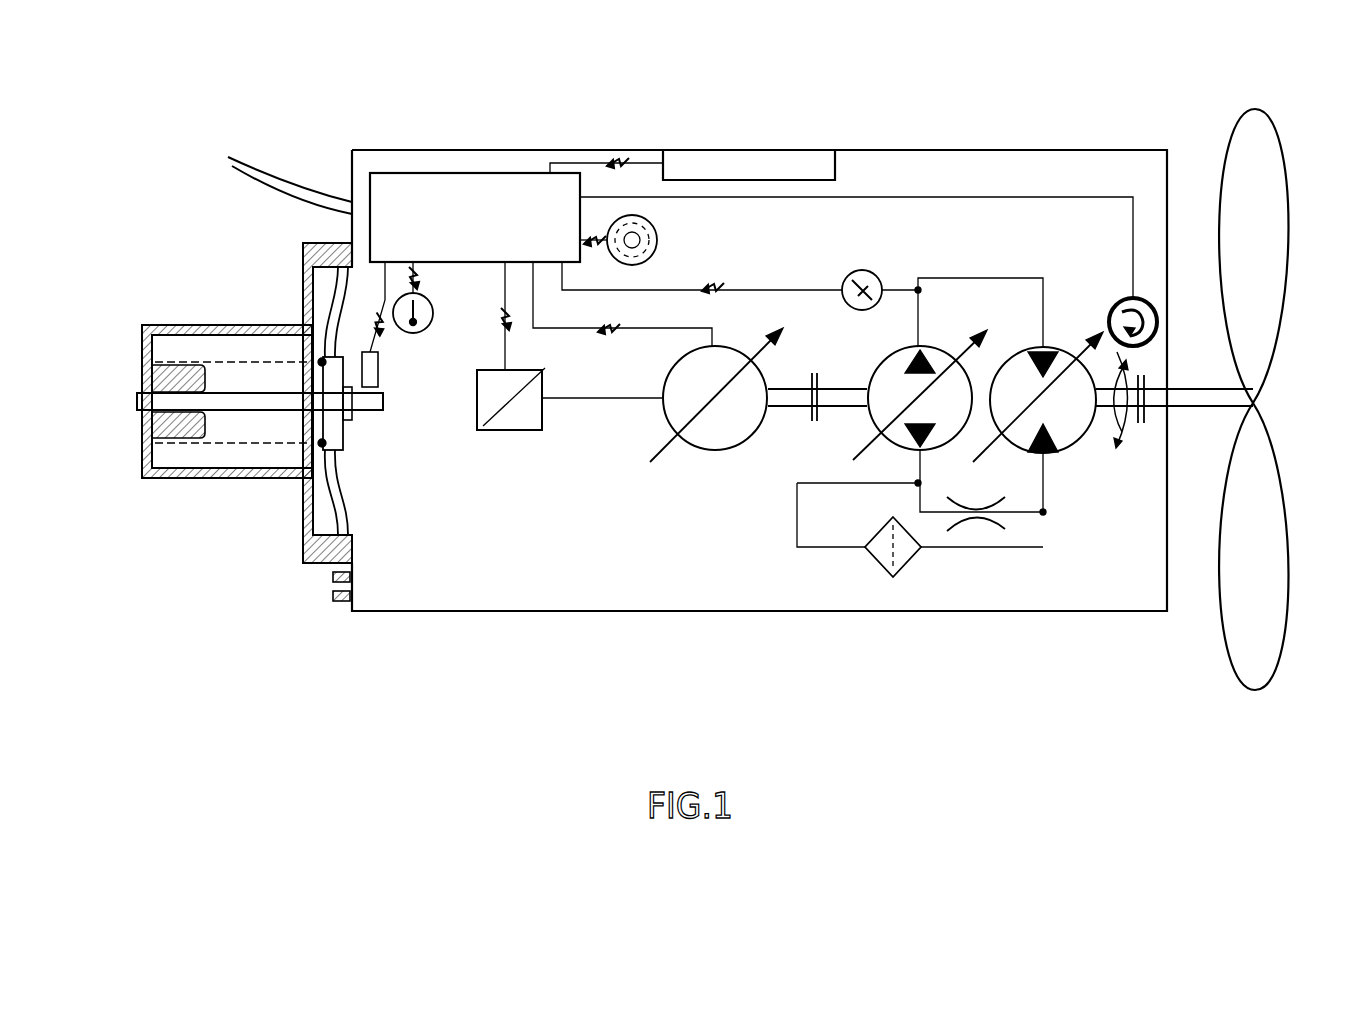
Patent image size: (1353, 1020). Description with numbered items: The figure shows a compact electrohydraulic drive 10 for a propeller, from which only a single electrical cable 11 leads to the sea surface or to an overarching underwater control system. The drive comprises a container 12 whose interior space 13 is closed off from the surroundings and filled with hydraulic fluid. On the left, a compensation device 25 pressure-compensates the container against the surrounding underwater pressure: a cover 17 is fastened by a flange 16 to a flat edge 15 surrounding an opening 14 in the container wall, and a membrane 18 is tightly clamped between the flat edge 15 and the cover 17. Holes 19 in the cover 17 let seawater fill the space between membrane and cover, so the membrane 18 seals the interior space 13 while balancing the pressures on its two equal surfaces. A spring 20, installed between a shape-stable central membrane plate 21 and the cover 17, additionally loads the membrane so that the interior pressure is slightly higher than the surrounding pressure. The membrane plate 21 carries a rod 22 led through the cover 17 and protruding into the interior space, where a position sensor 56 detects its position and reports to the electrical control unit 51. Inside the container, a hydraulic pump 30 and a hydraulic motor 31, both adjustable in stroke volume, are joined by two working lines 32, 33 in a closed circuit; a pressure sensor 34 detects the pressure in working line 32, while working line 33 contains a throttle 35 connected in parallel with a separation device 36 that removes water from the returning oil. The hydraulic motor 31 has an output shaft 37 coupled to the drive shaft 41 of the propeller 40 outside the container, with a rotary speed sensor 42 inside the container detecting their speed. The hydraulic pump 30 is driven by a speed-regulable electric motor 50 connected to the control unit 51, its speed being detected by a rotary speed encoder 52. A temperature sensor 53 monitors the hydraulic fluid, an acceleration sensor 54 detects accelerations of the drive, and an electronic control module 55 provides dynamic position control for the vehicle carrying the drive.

The compact electrohydraulic drive 10 is at (945, 133).
The electrical cable 11 is at (290, 198).
The container 12 is at (455, 611).
The interior space 13 is at (562, 536).
The opening 14 is at (340, 524).
The flat edge 15 is at (343, 253).
The flange 16 is at (330, 520).
The cover 17 is at (212, 322).
The membrane 18 is at (305, 510).
The holes 19 is at (145, 448).
The spring 20 is at (178, 445).
The membrane plate 21 is at (298, 318).
The rod 22 is at (250, 400).
The compensation device 25 is at (165, 303).
The hydraulic pump 30 is at (942, 348).
The hydraulic motor 31 is at (1067, 350).
The working line 32 is at (1025, 276).
The working line 33 is at (1040, 477).
The pressure sensor 34 is at (867, 270).
The throttle 35 is at (975, 522).
The separation device 36 is at (878, 560).
The output shaft 37 is at (1137, 432).
The propeller 40 is at (1268, 292).
The drive shaft 41 is at (1199, 404).
The rotary speed sensor 42 is at (1147, 300).
The electric motor 50 is at (713, 455).
The electrical control unit 51 is at (432, 205).
The rotary speed encoder 52 is at (513, 405).
The temperature sensor 53 is at (413, 334).
The acceleration sensor 54 is at (660, 240).
The electronic control module 55 is at (790, 165).
The position sensor 56 is at (368, 372).